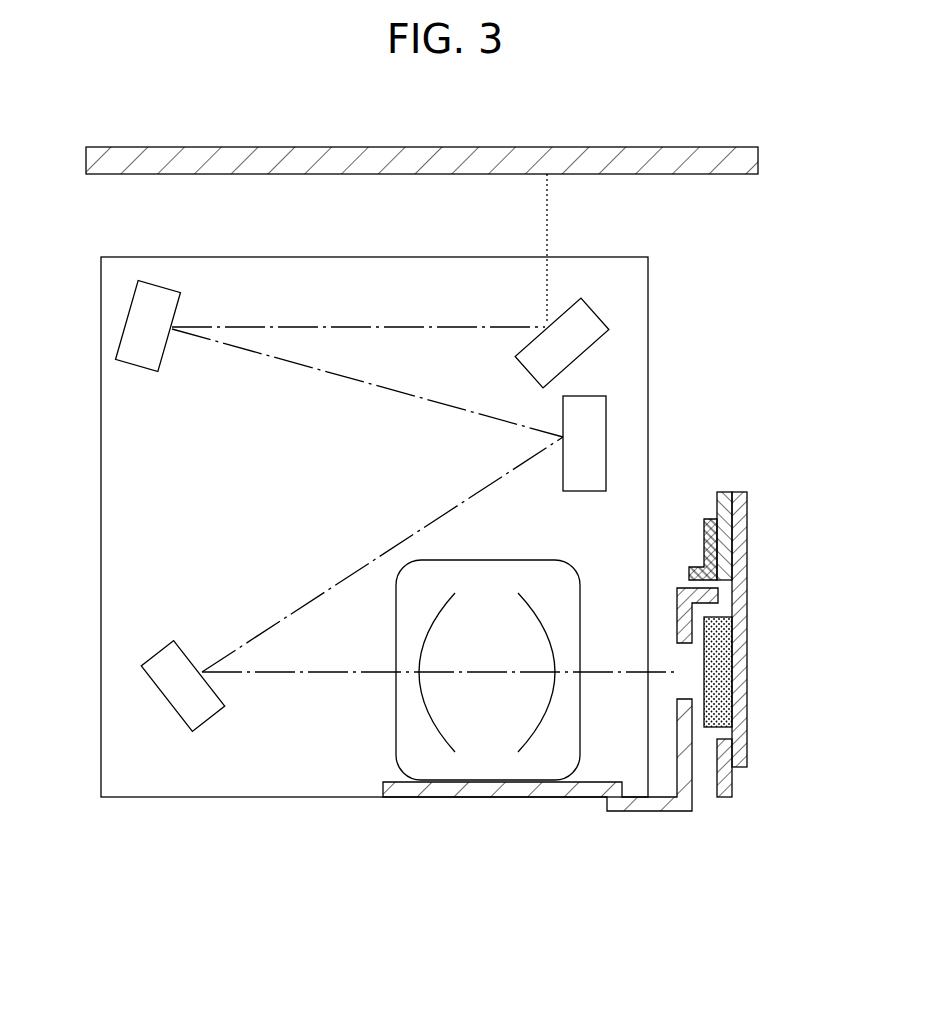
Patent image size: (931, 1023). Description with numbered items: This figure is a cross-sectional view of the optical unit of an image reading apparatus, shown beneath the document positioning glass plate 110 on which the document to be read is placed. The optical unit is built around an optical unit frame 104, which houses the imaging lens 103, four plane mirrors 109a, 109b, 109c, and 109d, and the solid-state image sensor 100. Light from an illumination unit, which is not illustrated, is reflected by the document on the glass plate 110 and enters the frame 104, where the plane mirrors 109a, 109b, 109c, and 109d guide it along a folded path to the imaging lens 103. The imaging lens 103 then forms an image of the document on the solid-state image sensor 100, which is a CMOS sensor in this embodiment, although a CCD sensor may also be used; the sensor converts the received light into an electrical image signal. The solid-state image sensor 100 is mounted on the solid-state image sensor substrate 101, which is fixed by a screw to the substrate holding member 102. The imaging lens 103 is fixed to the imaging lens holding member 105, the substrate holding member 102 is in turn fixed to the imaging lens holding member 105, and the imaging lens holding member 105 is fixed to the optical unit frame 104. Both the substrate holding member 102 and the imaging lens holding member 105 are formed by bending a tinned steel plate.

The solid-state image sensor 100 is at (725, 680).
The solid-state image sensor substrate 101 is at (737, 490).
The substrate holding member 102 is at (733, 783).
The imaging lens 103 is at (487, 742).
The optical unit frame 104 is at (213, 798).
The imaging lens holding member 105 is at (663, 800).
The plane mirror 109a is at (170, 692).
The plane mirror 109b is at (587, 480).
The plane mirror 109c is at (128, 330).
The plane mirror 109d is at (607, 330).
The document positioning glass plate 110 is at (312, 160).